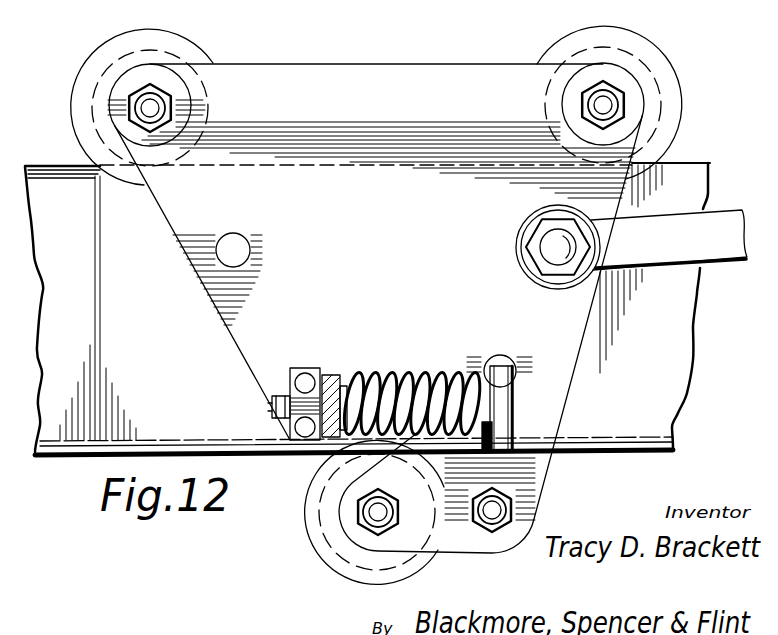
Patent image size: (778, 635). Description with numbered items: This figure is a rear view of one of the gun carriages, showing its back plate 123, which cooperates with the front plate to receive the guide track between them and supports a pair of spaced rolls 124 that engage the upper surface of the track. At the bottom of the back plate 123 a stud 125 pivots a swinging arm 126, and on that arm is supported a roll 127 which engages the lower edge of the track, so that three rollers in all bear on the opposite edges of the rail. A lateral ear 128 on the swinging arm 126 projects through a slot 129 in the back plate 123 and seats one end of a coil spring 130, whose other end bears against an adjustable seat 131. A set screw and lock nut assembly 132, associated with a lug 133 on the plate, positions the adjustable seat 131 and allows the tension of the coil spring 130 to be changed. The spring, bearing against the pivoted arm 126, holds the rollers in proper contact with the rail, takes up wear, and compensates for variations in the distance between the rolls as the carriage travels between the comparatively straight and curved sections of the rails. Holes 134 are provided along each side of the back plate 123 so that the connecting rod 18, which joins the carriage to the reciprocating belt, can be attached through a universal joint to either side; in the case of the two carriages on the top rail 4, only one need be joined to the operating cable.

The top rail 4 is at (700, 167).
The connecting rod 18 is at (724, 215).
The back plate 123 is at (137, 152).
The spaced rolls 124 is at (185, 50).
The stud 125 is at (533, 493).
The swinging arm 126 is at (353, 527).
The roll 127 is at (306, 487).
The lateral ear 128 is at (517, 367).
The slot 129 is at (497, 355).
The coil spring 130 is at (385, 372).
The adjustable seat 131 is at (337, 375).
The set screw and lock nut assembly 132 is at (270, 400).
The lug 133 is at (293, 370).
The holes 134 is at (222, 247).